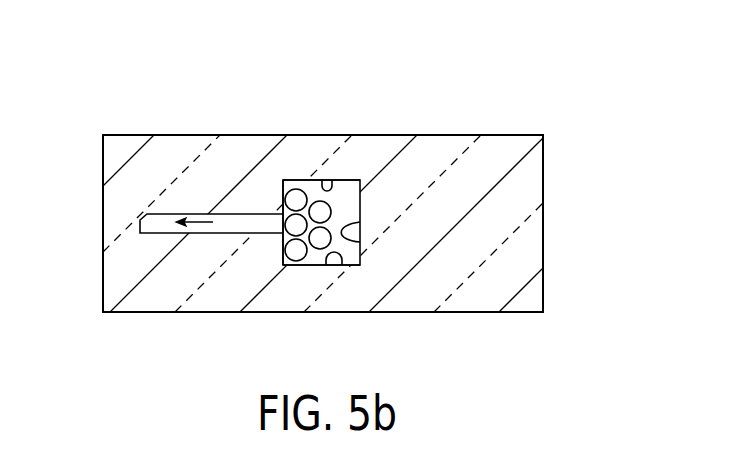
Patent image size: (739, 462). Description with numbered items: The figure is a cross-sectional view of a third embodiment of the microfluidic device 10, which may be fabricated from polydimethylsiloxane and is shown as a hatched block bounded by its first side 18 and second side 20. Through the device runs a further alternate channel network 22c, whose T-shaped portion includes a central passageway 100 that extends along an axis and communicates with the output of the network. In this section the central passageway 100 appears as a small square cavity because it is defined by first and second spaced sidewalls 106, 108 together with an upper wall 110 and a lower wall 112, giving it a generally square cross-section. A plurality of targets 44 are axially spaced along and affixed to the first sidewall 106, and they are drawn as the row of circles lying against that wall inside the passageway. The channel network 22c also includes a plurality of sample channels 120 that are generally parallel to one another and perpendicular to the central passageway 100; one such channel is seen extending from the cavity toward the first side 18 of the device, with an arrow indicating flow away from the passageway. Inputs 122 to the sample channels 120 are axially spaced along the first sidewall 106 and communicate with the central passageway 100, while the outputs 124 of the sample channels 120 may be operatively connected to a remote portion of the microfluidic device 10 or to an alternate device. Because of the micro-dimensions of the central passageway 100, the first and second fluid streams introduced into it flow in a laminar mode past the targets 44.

The microfluidic device 10 is at (572, 340).
The first side 18 is at (101, 196).
The second side 20 is at (545, 230).
The channel network 22c is at (353, 179).
The targets 44 is at (295, 202).
The central passageway 100 is at (345, 235).
The first sidewall 106 is at (286, 182).
The second sidewall 108 is at (360, 222).
The upper wall 110 is at (322, 180).
The lower wall 112 is at (343, 265).
The sample channels 120 is at (172, 213).
The inputs 122 is at (283, 265).
The outputs 124 is at (136, 230).